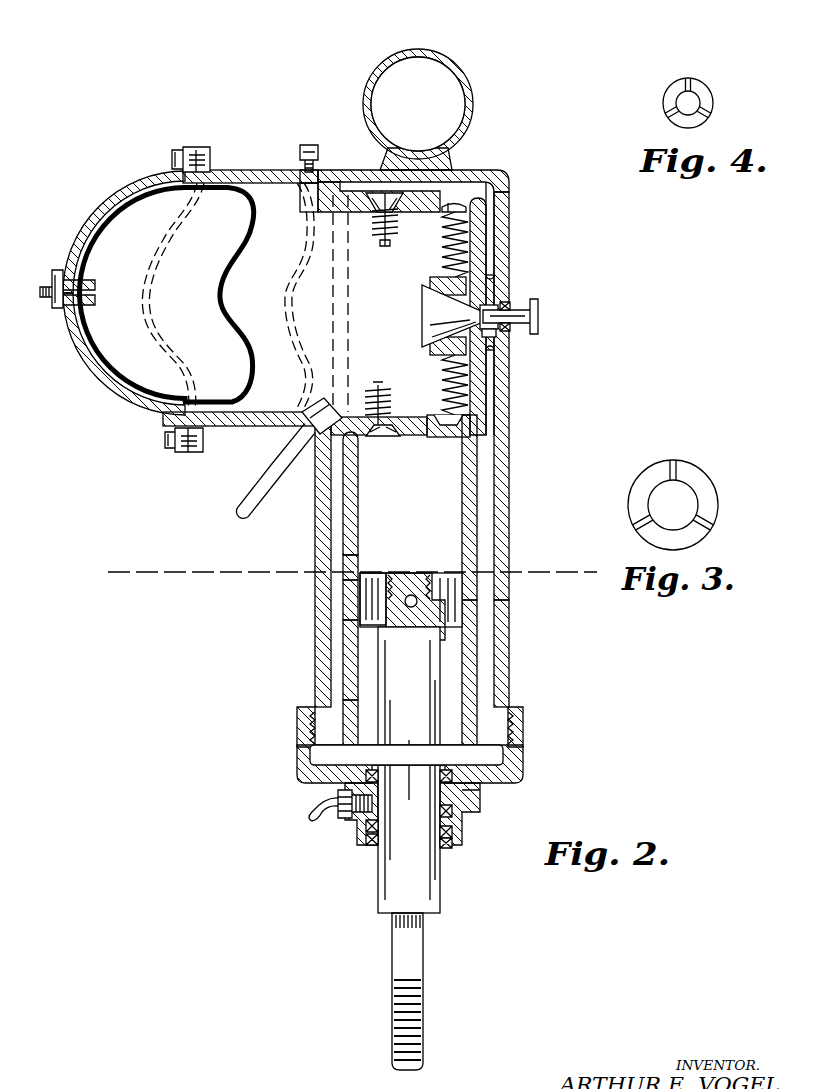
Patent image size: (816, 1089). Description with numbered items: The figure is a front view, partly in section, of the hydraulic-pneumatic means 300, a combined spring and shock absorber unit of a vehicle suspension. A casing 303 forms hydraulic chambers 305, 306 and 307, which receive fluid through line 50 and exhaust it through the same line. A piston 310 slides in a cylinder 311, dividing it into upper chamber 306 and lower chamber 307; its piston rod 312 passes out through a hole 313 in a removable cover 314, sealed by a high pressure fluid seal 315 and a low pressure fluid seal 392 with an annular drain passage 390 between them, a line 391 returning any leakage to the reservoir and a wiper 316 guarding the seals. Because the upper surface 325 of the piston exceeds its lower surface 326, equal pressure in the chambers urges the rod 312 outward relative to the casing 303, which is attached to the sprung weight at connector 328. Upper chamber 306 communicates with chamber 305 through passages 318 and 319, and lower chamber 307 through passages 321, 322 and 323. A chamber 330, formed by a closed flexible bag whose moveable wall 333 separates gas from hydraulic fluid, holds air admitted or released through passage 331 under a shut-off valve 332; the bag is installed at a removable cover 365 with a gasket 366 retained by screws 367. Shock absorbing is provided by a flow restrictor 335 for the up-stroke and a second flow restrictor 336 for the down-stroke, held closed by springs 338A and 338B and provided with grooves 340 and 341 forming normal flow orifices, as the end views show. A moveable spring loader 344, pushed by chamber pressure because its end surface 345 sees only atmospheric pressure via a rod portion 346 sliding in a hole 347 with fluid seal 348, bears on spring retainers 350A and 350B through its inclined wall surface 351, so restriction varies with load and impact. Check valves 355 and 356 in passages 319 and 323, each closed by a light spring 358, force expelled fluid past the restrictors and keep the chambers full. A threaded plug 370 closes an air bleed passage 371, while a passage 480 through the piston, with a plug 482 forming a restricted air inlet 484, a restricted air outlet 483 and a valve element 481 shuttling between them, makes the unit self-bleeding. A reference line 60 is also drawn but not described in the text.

In FIG. 2, the line 50 is at (243, 500).
In FIG. 2, the axis centerline 60 is at (112, 580).
In FIG. 2, the hydraulic-pneumatic means 300 is at (514, 182).
In FIG. 2, the casing 303 is at (509, 480).
In FIG. 2, the chamber 305 is at (300, 172).
In FIG. 2, the upper chamber 306 is at (350, 525).
In FIG. 2, the lower chamber 307 is at (370, 690).
In FIG. 2, the piston 310 is at (372, 600).
In FIG. 2, the cylinder 311 is at (470, 545).
In FIG. 2, the piston rod 312 is at (395, 875).
In FIG. 2, the hole 313 is at (470, 818).
In FIG. 2, the removable cover 314 is at (525, 775).
In FIG. 2, the high pressure fluid seal 315 is at (338, 792).
In FIG. 2, the wiper 316 is at (447, 850).
In FIG. 2, the passage 318 is at (415, 437).
In FIG. 2, the passage 319 is at (382, 440).
In FIG. 2, the passage 321 is at (490, 650).
In FIG. 2, the passage 322 is at (490, 200).
In FIG. 2, the passage 323 is at (372, 195).
In FIG. 2, the upper surface 325 is at (350, 562).
In FIG. 2, the lower surface 326 is at (360, 655).
In FIG. 2, the connector 328 is at (468, 82).
In FIG. 2, the chamber 330 is at (125, 208).
In FIG. 2, the passage 331 is at (95, 286).
In FIG. 2, the shut-off valve 332 is at (50, 300).
In FIG. 2, the moveable wall 333 is at (220, 300).
In FIG. 2, the flow restrictor 335 is at (446, 428).
In FIG. 3, the flow restrictor 335 is at (710, 500).
In FIG. 2, the second flow restrictor 336 is at (456, 205).
In FIG. 4, the second flow restrictor 336 is at (712, 100).
In FIG. 2, the spring 338A is at (468, 248).
In FIG. 2, the spring 338B is at (468, 385).
In FIG. 3, the groove 340 is at (690, 465).
In FIG. 4, the groove 341 is at (672, 88).
In FIG. 2, the spring loader 344 is at (416, 313).
In FIG. 2, the end surface 345 is at (540, 317).
In FIG. 2, the rod portion 346 is at (505, 312).
In FIG. 2, the hole 347 is at (510, 304).
In FIG. 2, the fluid seal 348 is at (496, 337).
In FIG. 2, the spring retainer 350A is at (432, 292).
In FIG. 2, the spring retainer 350B is at (466, 346).
In FIG. 2, the inclined wall surface 351 is at (425, 332).
In FIG. 2, the check valve 355 is at (306, 448).
In FIG. 2, the second check valve 356 is at (403, 160).
In FIG. 2, the spring 358 is at (378, 234).
In FIG. 2, the removable cover 365 is at (100, 386).
In FIG. 2, the gasket 366 is at (195, 147).
In FIG. 2, the screws 367 is at (175, 442).
In FIG. 2, the threaded plug 370 is at (310, 145).
In FIG. 2, the air bleed passage 371 is at (300, 212).
In FIG. 2, the annular drain passage 390 is at (470, 800).
In FIG. 2, the line 391 is at (335, 816).
In FIG. 2, the low pressure fluid seal 392 is at (455, 838).
In FIG. 2, the passage 480 is at (445, 600).
In FIG. 2, the valve element 481 is at (376, 575).
In FIG. 2, the plug 482 is at (411, 594).
In FIG. 2, the restricted air outlet 483 is at (480, 660).
In FIG. 2, the restricted air inlet 484 is at (418, 575).